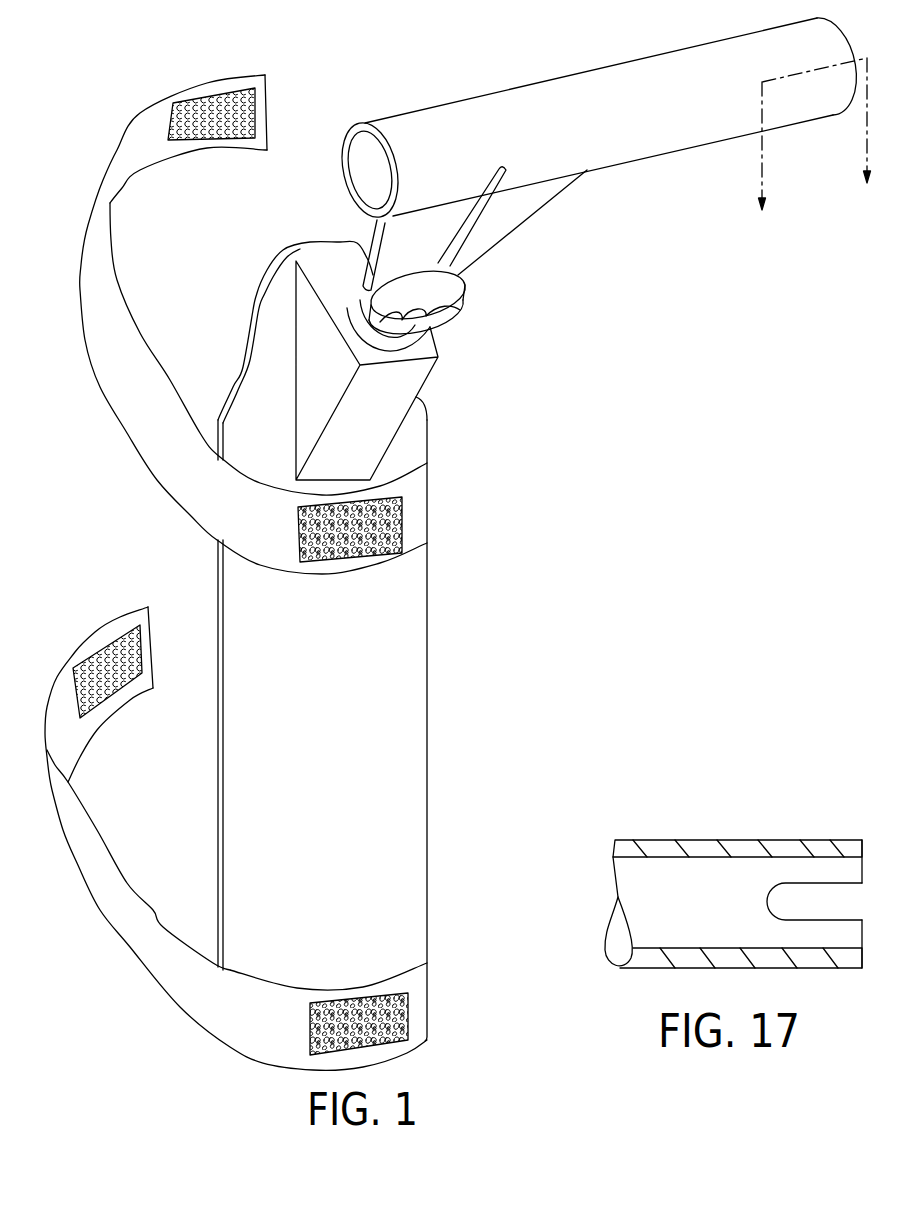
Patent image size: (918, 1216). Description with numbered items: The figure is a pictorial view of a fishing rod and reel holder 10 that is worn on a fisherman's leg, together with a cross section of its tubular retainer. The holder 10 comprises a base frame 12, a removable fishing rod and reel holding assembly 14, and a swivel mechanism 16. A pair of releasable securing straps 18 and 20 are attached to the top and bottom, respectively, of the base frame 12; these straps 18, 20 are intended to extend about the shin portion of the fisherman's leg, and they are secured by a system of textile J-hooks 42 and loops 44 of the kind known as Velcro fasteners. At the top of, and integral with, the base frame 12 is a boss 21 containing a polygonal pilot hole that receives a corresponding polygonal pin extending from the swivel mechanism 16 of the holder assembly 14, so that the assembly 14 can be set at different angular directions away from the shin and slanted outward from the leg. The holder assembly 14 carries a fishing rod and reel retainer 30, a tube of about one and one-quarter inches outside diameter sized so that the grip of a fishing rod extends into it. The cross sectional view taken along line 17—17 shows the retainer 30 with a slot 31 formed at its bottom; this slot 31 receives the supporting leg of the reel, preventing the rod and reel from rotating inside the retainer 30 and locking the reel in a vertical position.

In FIG. 1, the fishing rod and reel holder 10 is at (549, 750).
In FIG. 1, the base frame 12 is at (440, 662).
In FIG. 1, the fishing rod and reel holding assembly 14 is at (626, 170).
In FIG. 1, the swivel mechanism 16 is at (468, 322).
In FIG. 1, the section line 17— 17 is at (815, 134).
In FIG. 1, the securing strap 18 is at (141, 333).
In FIG. 1, the securing strap 20 is at (123, 884).
In FIG. 1, the boss 21 is at (432, 399).
In FIG. 1, the fishing rod and reel retainer 30 is at (572, 75).
In FIG. 17, the fishing rod and reel retainer 30 is at (673, 840).
In FIG. 17, the slot 31 is at (853, 902).
In FIG. 1, the textile J-hooks 42 is at (222, 135).
In FIG. 1, the loops 44 is at (400, 537).